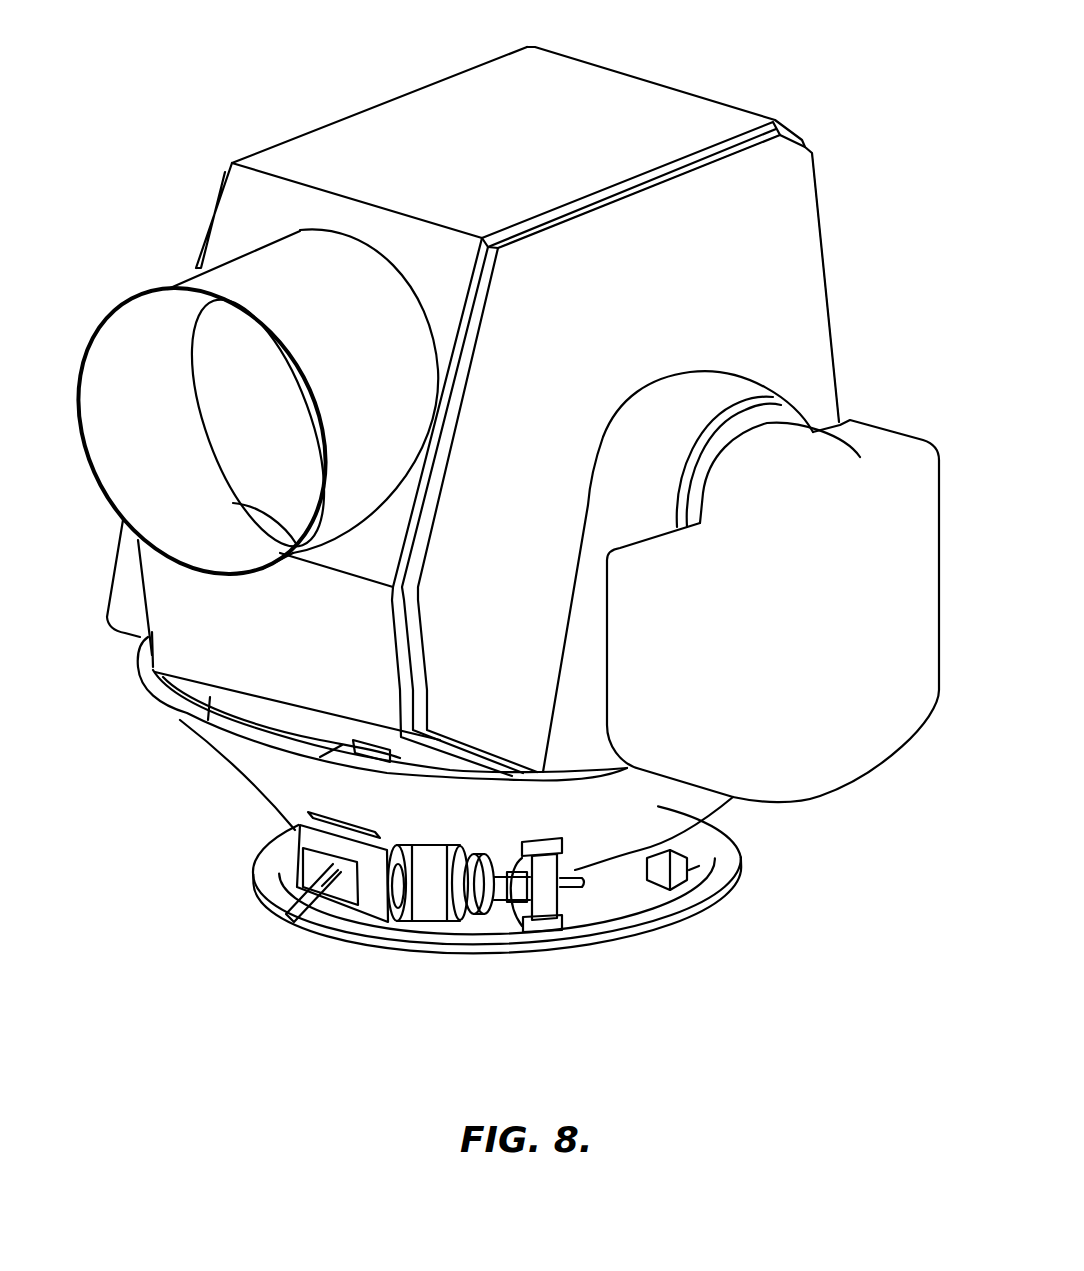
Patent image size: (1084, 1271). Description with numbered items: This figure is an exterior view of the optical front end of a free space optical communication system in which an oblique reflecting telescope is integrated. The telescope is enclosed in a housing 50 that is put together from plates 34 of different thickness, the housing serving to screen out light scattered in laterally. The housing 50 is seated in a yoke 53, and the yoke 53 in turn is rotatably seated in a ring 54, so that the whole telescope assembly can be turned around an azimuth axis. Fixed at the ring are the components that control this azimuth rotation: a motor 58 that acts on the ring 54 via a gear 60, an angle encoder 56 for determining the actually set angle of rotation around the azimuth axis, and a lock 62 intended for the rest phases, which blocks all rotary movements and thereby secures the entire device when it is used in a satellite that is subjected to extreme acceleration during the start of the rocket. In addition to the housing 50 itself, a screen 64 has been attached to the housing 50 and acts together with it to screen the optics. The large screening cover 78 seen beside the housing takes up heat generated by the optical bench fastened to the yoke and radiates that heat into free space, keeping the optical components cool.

The plates 34 is at (615, 87).
The housing 50 is at (742, 265).
The screen 64 is at (330, 295).
The yoke 53 is at (717, 397).
The screening cover 78 is at (840, 737).
The ring 54 is at (710, 873).
The lock 62 is at (293, 920).
The motor 58 is at (402, 920).
The gear 60 is at (516, 930).
The angle encoder 56 is at (657, 887).